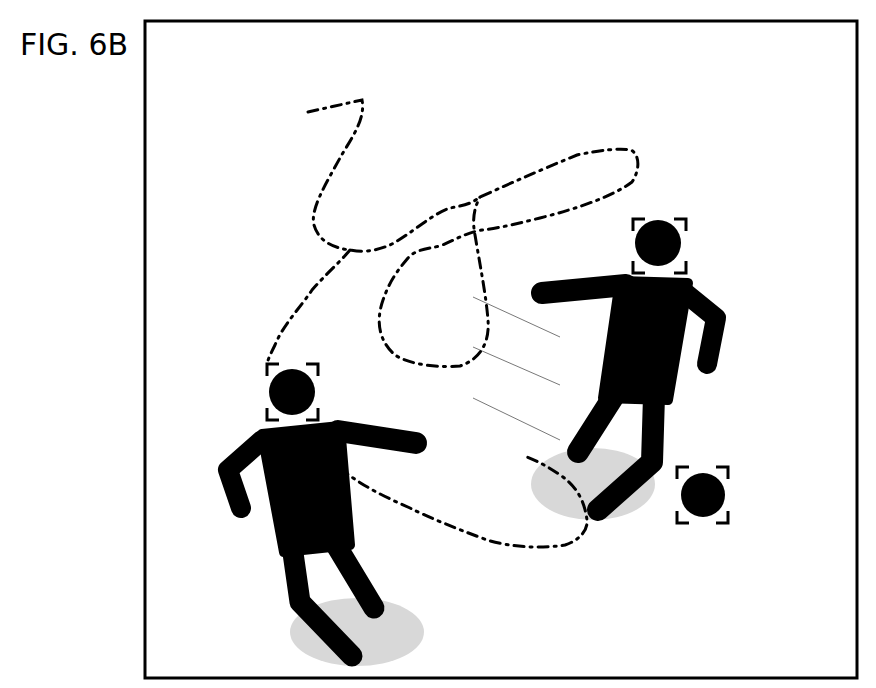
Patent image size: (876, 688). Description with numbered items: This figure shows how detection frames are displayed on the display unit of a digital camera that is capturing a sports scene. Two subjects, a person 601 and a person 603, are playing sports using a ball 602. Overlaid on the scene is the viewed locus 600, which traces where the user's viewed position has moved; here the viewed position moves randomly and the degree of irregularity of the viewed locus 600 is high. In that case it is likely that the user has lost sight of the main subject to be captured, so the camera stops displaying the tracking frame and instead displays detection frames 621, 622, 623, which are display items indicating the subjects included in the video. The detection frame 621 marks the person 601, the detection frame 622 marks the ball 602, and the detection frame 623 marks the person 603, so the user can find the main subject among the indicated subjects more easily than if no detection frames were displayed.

The viewed locus 600 is at (366, 103).
The person 601 is at (712, 305).
The ball 602 is at (727, 478).
The person 603 is at (250, 440).
The detection frame 621 is at (642, 217).
The detection frame 622 is at (680, 467).
The detection frame 623 is at (280, 365).